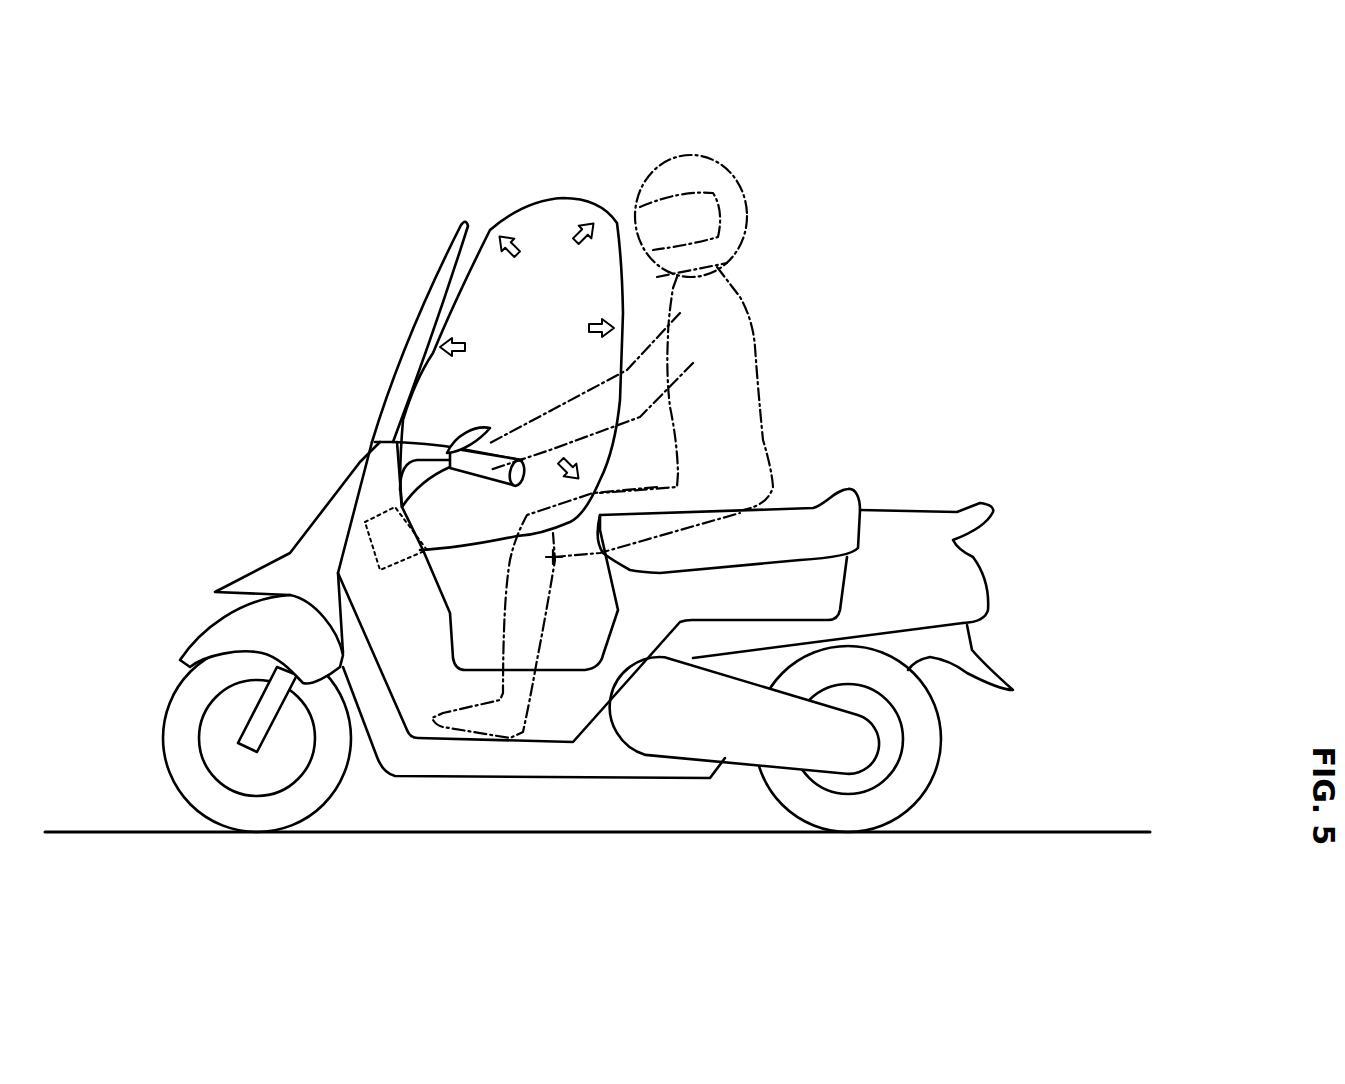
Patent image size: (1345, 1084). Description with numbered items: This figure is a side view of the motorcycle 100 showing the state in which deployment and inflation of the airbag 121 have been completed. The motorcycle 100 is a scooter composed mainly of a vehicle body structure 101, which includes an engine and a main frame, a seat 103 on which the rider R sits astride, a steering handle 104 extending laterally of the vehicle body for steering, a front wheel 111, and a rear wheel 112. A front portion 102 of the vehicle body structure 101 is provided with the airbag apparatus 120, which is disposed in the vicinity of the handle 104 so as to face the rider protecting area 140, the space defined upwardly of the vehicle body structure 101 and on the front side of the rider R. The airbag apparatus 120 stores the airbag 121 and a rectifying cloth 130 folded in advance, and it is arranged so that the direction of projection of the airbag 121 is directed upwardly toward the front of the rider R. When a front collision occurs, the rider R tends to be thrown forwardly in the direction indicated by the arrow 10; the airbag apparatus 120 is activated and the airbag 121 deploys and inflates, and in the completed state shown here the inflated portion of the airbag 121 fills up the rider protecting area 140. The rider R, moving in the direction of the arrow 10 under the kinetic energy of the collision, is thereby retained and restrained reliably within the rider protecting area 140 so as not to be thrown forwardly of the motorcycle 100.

The arrow 10 is at (747, 97).
The motorcycle 100 is at (596, 613).
The vehicle body structure 101 is at (467, 780).
The front portion 102 is at (357, 458).
The seat 103 is at (788, 523).
The steering handle 104 is at (412, 443).
The front wheel 111 is at (247, 810).
The rear wheel 112 is at (823, 813).
The airbag apparatus 120 is at (367, 520).
The airbag 121 is at (495, 225).
The rectifying cloth 130 is at (467, 427).
The rider protecting area 140 is at (544, 287).
The rider R is at (730, 343).